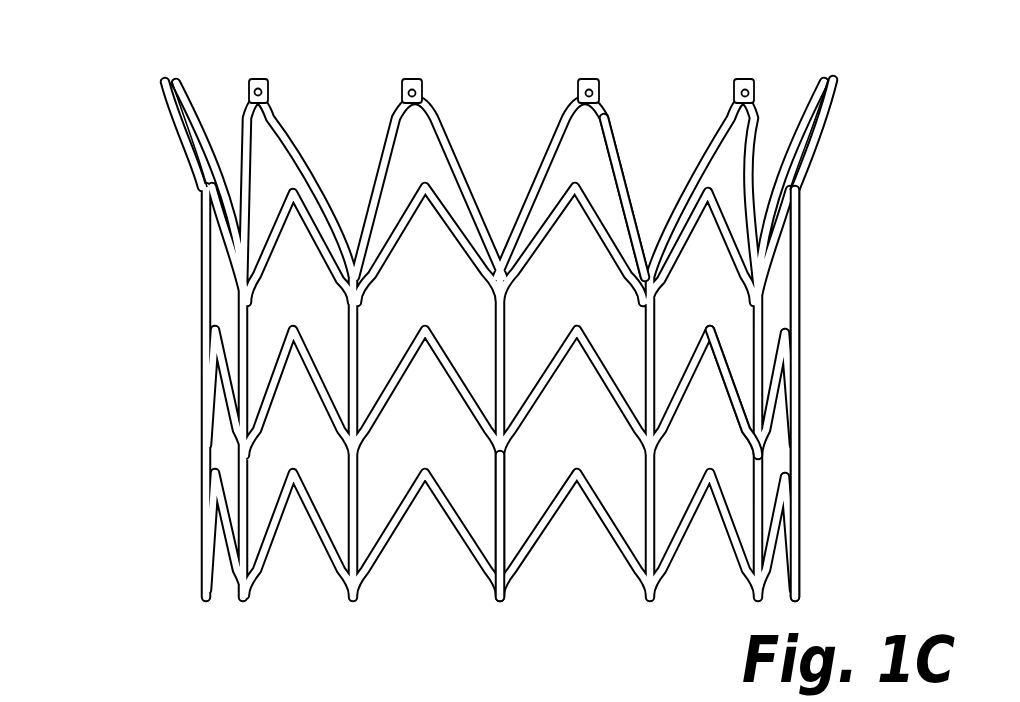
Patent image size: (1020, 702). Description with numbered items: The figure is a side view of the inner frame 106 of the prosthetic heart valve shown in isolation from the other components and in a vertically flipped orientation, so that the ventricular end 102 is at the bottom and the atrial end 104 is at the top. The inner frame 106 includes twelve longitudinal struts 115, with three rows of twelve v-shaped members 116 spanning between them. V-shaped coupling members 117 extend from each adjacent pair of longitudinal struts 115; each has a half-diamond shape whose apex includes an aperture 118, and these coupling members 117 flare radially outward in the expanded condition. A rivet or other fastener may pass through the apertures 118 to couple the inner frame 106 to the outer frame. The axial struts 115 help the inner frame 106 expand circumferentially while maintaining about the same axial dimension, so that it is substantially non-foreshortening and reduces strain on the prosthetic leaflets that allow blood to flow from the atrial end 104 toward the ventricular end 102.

The inner frame 106 is at (133, 55).
The aperture 118 is at (418, 79).
The atrial end 104 is at (591, 78).
The v-shaped coupling member 117 is at (615, 160).
The longitudinal strut 115 is at (762, 350).
The v-shaped member 116 is at (740, 388).
The ventricular end 102 is at (503, 601).